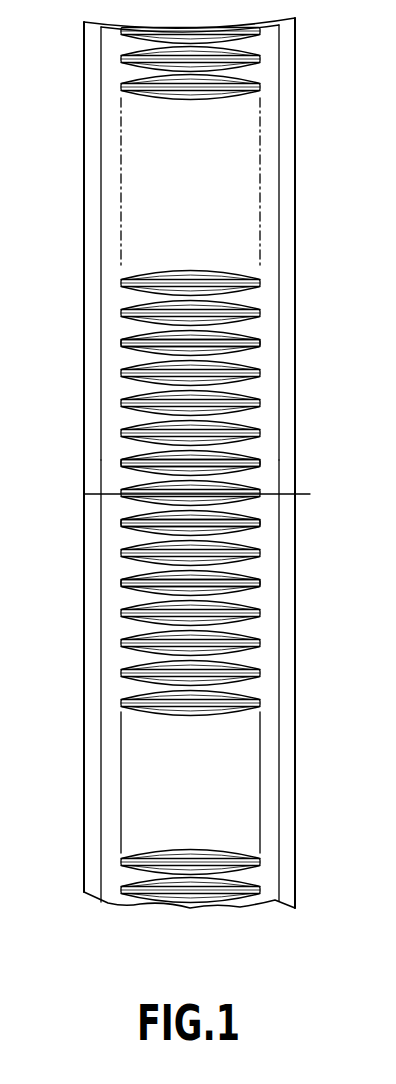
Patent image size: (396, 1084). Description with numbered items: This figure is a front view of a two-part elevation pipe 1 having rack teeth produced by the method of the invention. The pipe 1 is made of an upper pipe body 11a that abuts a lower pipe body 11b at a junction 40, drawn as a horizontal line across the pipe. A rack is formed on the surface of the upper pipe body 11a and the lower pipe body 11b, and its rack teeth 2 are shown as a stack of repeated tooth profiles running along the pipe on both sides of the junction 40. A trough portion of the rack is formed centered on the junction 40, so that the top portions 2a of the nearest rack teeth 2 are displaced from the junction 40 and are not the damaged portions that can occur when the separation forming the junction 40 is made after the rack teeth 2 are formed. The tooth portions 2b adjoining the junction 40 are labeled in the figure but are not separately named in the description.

The two-part elevation pipe 1 is at (200, 463).
The rack teeth 2 is at (243, 432).
The top portion 2a is at (125, 373).
The lens 2b is at (128, 482).
The upper pipe body 11a is at (296, 264).
The lower pipe body 11b is at (270, 583).
The junction 40 is at (85, 494).